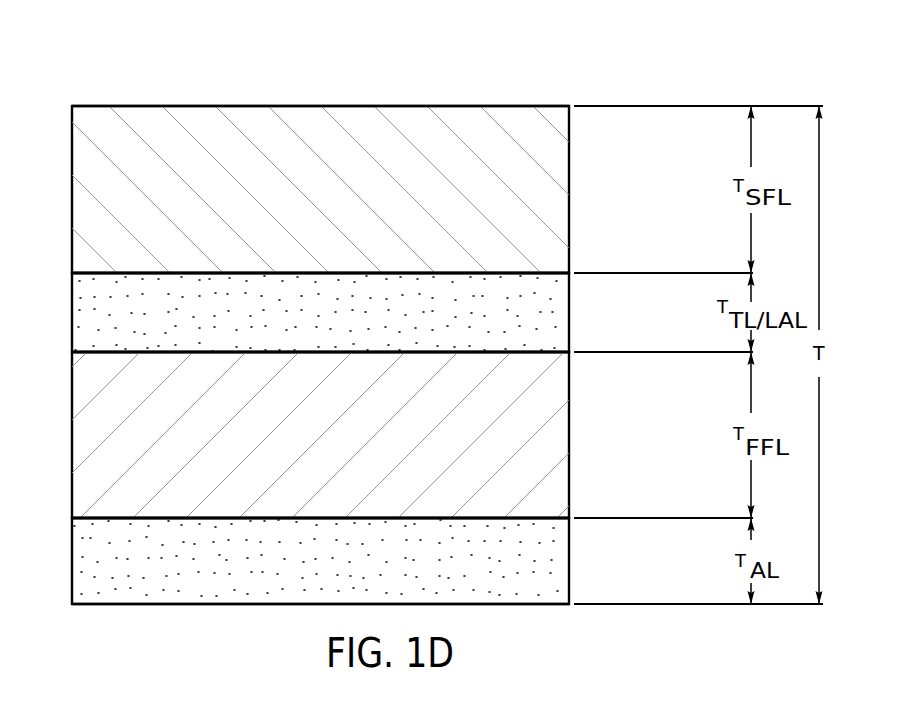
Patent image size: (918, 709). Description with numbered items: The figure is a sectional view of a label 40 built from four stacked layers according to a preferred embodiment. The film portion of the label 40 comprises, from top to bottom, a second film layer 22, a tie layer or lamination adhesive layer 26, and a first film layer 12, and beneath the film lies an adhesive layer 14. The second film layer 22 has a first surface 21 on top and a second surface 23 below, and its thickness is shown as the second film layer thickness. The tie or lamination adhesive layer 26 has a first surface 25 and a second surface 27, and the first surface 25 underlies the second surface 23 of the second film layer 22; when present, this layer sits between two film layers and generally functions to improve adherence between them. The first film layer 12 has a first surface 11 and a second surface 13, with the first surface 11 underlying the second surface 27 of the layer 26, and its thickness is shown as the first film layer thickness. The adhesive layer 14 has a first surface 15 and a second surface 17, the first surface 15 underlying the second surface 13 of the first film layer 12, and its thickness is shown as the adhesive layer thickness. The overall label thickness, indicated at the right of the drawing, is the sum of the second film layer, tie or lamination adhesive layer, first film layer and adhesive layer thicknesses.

The label 40 is at (520, 85).
The second film layer 22 is at (574, 176).
The first surface of the second film layer 21 is at (100, 106).
The second surface of the second film layer 23 is at (100, 273).
The tie layer or lamination adhesive layer 26 is at (574, 323).
The first surface of the tie or lamination adhesive layer 25 is at (133, 273).
The second surface of the tie or lamination adhesive layer 27 is at (100, 352).
The first film layer 12 is at (574, 433).
The first surface of the first film layer 11 is at (133, 352).
The second surface of the first film layer 13 is at (100, 518).
The adhesive layer 14 is at (574, 570).
The first surface of the adhesive layer 15 is at (133, 518).
The second surface of the adhesive layer 17 is at (100, 604).